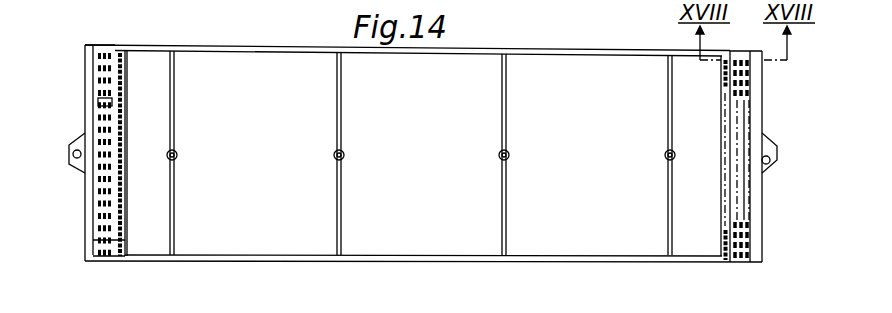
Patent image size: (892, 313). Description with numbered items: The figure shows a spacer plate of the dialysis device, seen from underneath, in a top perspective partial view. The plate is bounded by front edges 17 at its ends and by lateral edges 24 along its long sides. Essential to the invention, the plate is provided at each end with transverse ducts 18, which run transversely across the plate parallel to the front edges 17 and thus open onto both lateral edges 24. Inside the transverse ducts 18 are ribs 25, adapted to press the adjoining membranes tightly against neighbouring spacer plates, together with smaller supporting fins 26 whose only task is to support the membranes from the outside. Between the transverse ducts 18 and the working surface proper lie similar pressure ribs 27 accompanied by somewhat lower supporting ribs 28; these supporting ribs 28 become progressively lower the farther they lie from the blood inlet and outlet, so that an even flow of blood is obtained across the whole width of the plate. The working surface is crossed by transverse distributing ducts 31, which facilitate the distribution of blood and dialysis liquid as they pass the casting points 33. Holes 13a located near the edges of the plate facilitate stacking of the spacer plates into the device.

The holes facilitating stacking 13a is at (76, 162).
The front edges 17 is at (85, 72).
The transverse ducts 18 is at (100, 222).
The lateral edges 24 is at (252, 46).
The ribs 25 is at (100, 103).
The supporting fins 26 is at (98, 243).
The pressure ribs 27 is at (121, 86).
The supporting ribs 28 is at (722, 78).
The transverse distributing ducts 31 is at (175, 108).
The casting points 33 is at (178, 155).